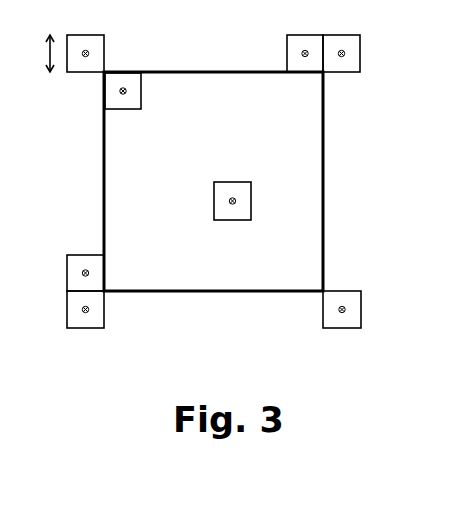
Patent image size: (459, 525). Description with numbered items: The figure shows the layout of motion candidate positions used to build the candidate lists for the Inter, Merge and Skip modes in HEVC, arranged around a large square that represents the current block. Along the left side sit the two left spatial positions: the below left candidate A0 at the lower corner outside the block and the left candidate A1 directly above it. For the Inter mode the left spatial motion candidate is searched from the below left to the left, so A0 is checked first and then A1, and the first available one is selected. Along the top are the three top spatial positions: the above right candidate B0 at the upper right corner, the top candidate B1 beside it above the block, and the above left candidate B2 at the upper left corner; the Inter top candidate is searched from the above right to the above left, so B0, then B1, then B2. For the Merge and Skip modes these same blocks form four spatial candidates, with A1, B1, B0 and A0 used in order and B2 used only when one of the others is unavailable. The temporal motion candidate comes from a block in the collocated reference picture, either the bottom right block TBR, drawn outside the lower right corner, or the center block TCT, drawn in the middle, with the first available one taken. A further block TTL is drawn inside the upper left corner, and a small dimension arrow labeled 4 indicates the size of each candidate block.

The above left candidate B2 is at (85, 42).
The top candidate B1 is at (305, 42).
The above right candidate B0 is at (341, 42).
The left candidate A1 is at (73, 273).
The below left candidate A0 is at (73, 309).
The top-left template block TTL is at (123, 105).
The temporal candidate block at center TCT is at (232, 215).
The temporal candidate block at bottom right TBR is at (342, 325).
The block size dimension (4 pixels) 4 is at (40, 53).